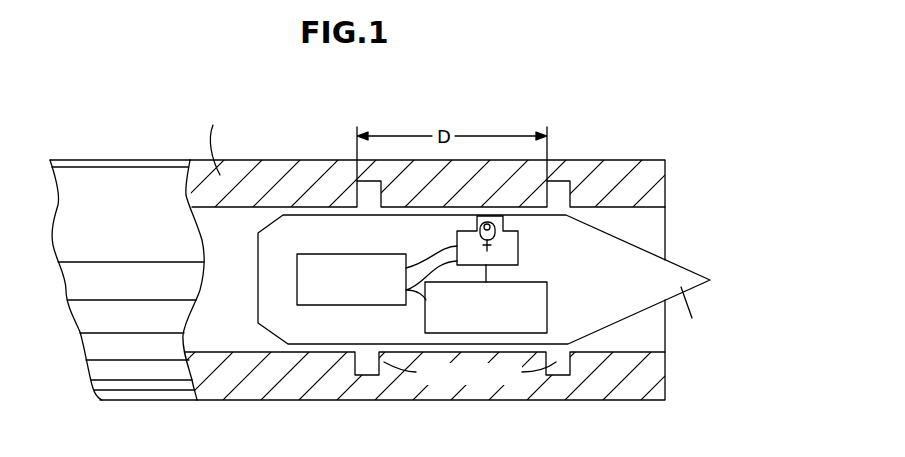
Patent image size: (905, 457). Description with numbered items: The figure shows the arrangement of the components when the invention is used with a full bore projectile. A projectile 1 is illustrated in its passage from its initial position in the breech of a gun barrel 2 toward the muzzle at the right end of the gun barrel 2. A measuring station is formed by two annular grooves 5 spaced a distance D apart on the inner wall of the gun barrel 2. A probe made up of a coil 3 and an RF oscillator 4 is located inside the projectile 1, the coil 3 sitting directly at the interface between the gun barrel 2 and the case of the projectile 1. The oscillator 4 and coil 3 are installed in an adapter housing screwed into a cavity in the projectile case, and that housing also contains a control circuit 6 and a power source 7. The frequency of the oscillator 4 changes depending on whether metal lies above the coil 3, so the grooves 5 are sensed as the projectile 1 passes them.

The projectile 1 is at (667, 273).
The gun barrel 2 is at (654, 190).
The coil 3 is at (467, 237).
The RF oscillator 4 is at (508, 238).
The annular grooves 5 is at (544, 376).
The control circuit 6 is at (547, 295).
The power source 7 is at (297, 283).